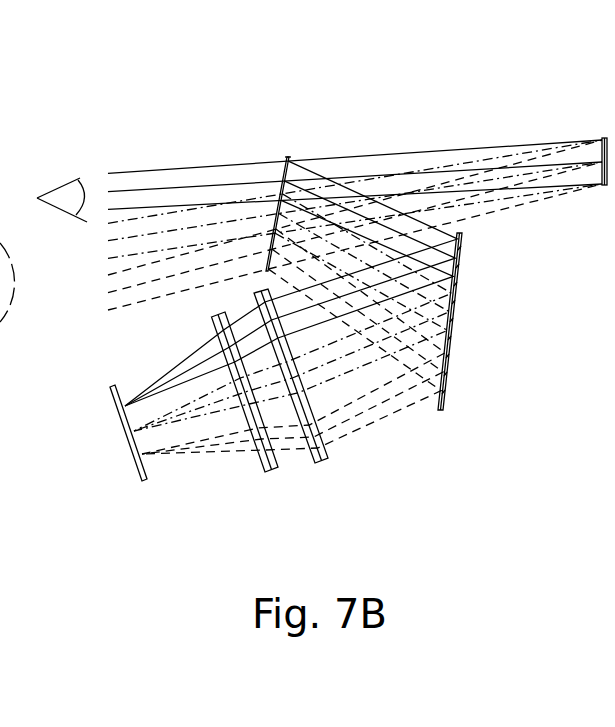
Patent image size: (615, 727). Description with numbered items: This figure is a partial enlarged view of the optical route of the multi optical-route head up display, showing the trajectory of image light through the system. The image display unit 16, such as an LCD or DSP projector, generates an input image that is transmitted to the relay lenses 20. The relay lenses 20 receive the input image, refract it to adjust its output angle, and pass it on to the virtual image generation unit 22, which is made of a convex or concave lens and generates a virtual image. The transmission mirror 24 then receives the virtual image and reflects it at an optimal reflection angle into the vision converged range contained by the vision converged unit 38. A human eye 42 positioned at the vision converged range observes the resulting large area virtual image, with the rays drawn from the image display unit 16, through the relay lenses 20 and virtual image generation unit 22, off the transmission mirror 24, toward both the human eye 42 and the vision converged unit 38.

The human eye 42 is at (52, 192).
The transmission mirror 24 is at (288, 157).
The vision converged unit 38 is at (602, 138).
The virtual image generation unit 22 is at (445, 411).
The relay lens 20 is at (276, 467).
The image display unit 16 is at (145, 481).